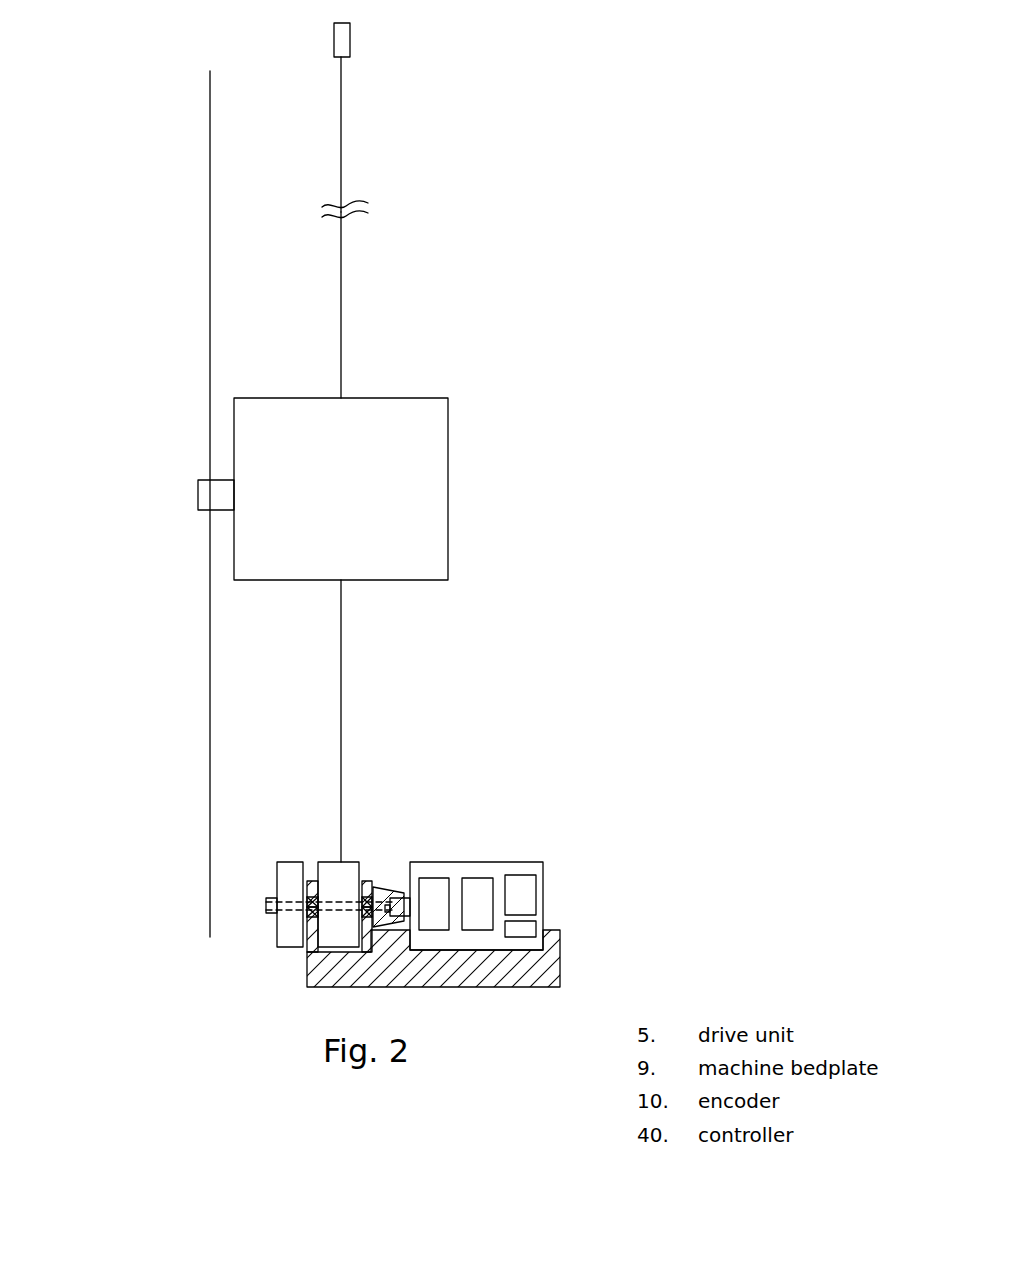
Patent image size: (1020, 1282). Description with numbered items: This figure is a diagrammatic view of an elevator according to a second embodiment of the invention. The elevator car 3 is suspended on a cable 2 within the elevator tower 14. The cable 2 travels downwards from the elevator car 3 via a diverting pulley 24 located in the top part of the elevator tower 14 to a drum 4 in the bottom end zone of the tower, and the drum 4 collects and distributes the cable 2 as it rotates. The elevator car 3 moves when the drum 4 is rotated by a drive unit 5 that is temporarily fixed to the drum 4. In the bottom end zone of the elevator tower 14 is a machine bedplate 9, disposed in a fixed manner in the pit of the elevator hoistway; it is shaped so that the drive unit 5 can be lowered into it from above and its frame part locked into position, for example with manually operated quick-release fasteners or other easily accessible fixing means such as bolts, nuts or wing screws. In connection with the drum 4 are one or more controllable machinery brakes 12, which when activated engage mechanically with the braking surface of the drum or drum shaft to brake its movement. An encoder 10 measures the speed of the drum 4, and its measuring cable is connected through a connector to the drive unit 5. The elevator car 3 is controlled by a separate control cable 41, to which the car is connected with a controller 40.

The cable 2 is at (343, 297).
The elevator car 3 is at (350, 502).
The drum 4 is at (327, 862).
The drive unit 5 is at (480, 862).
The machine bedplate 9 is at (563, 955).
The encoder 10 is at (262, 908).
The machinery brake 12 is at (290, 862).
The elevator tower 14 is at (393, 161).
The diverting pulley 24 is at (352, 40).
The controller 40 is at (198, 497).
The control cable 41 is at (210, 288).